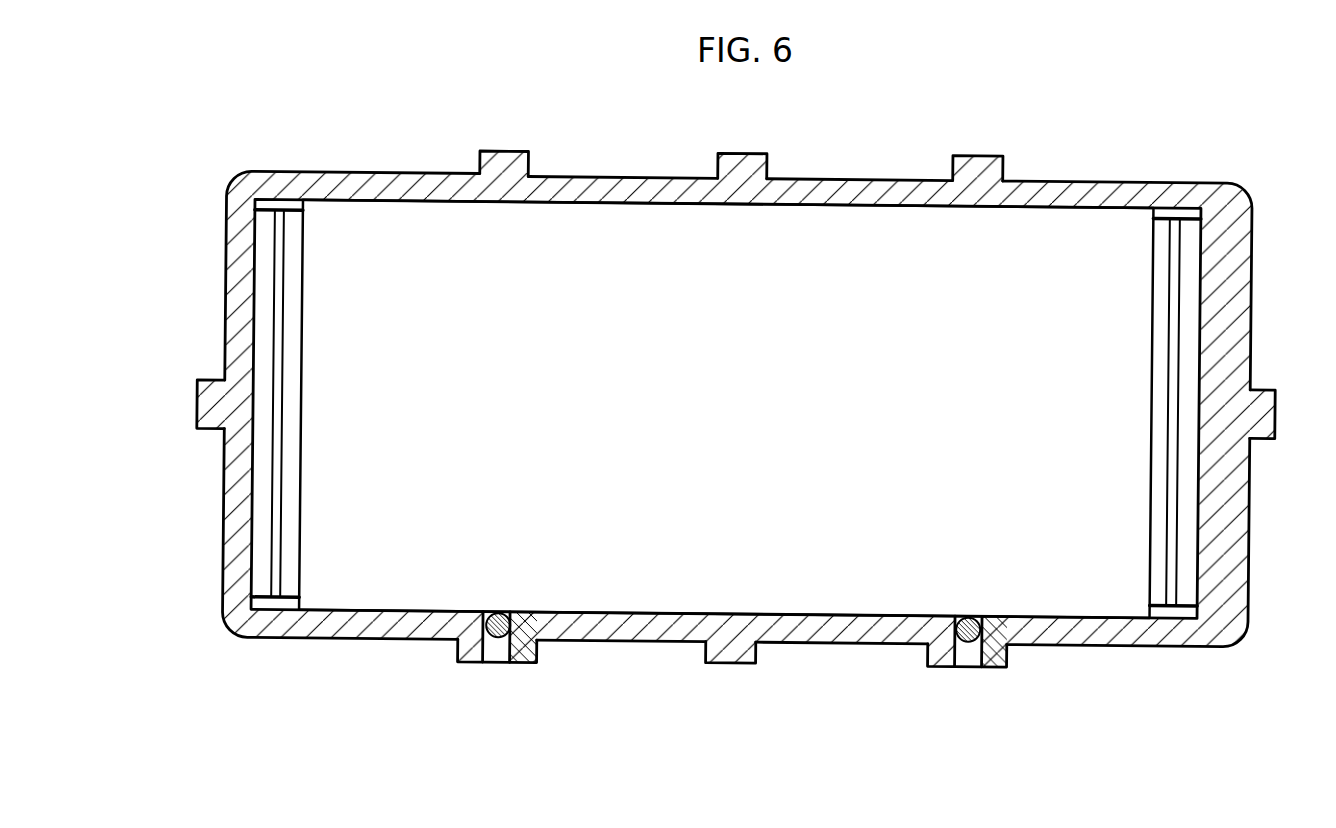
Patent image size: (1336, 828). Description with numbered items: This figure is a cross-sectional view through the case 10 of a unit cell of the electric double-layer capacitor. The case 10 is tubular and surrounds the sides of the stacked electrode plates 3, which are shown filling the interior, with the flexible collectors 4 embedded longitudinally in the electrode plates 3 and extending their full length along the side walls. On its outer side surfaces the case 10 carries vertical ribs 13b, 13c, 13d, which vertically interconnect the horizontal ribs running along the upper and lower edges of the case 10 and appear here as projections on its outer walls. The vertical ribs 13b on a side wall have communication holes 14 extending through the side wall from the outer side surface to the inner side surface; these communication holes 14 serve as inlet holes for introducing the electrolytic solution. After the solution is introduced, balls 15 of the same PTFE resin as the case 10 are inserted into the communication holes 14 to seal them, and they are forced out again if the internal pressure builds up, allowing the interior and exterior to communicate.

The case 10 is at (364, 177).
The vertical rib 13d is at (504, 152).
The vertical rib 13b is at (197, 388).
The electrode plate 3 is at (387, 585).
The flexible collector 4 is at (269, 558).
The vertical rib 13c is at (460, 665).
The ball 15 is at (539, 664).
The communication hole 14 is at (502, 666).